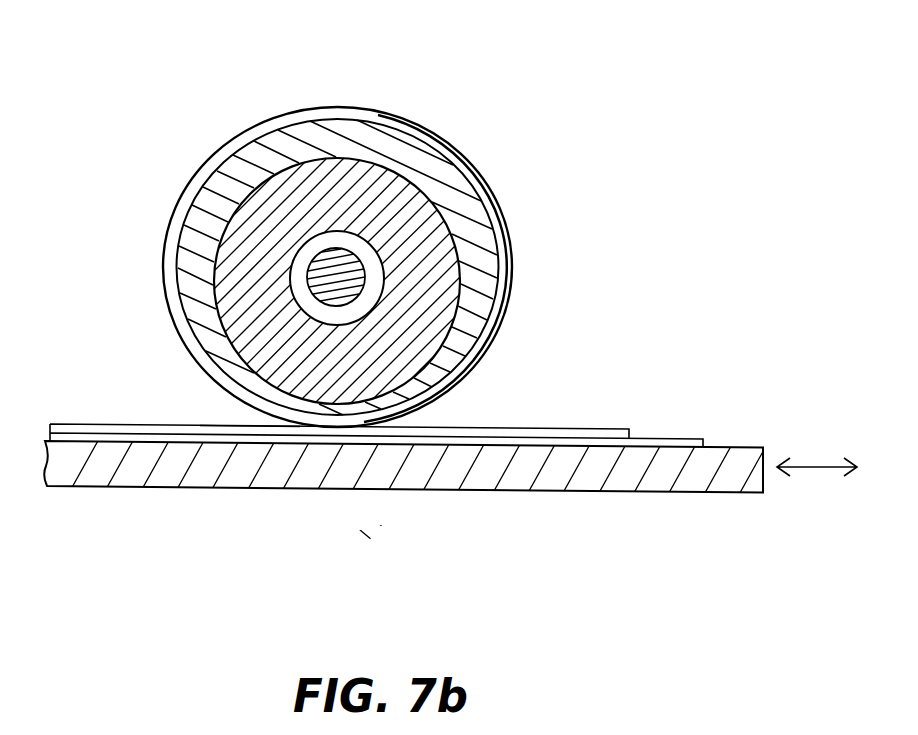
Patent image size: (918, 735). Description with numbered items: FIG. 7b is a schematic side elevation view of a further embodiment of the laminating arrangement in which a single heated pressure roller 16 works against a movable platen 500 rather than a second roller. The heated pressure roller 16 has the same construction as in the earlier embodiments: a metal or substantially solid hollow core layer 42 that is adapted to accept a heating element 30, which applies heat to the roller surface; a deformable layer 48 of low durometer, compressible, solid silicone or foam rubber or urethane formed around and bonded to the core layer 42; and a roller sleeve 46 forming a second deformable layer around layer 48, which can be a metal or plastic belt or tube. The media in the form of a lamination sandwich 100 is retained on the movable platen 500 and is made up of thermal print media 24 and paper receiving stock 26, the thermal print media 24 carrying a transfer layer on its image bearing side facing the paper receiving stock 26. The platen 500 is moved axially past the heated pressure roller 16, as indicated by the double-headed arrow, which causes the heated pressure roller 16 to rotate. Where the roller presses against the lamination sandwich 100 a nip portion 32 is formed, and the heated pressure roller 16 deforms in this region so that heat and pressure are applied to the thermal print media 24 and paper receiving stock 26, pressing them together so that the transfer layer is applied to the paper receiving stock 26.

The upper heated pressure roller 16 is at (438, 107).
The roller sleeve 46 is at (465, 178).
The deformable layer 48 is at (268, 152).
The core layer 42 is at (237, 227).
The heating element 30 is at (352, 286).
The lamination sandwich 100 is at (401, 443).
The movable platen 500 is at (657, 493).
The paper receiving stock 26 is at (643, 437).
The thermal print media 24 is at (552, 427).
The nip portion 32 is at (232, 421).